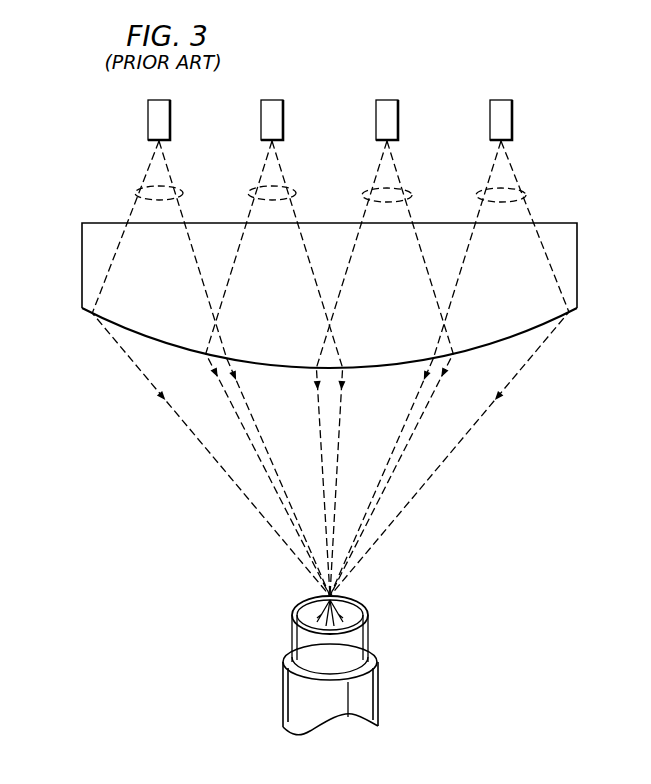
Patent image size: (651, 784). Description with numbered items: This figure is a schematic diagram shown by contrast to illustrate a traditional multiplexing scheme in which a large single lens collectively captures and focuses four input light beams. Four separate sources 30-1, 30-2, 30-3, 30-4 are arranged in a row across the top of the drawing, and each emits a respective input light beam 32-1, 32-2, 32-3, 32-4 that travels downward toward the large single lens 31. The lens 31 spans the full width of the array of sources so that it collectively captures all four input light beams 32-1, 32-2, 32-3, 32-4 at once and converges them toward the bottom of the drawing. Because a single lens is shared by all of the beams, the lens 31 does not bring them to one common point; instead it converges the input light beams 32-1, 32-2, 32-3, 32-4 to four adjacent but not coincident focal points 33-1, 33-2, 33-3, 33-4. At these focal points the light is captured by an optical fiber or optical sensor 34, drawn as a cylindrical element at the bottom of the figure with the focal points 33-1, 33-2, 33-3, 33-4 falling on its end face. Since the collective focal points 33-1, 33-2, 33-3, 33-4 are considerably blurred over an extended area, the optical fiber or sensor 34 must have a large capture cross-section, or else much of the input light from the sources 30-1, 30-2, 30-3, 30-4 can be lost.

The source 30-1 is at (148, 120).
The source 30-2 is at (261, 120).
The source 30-3 is at (398, 120).
The source 30-4 is at (512, 120).
The large single lens 31 is at (82, 262).
The input light beam 32-1 is at (136, 193).
The input light beam 32-2 is at (248, 192).
The input light beam 32-3 is at (411, 195).
The input light beam 32-4 is at (527, 197).
The focal point 33-1 is at (369, 614).
The focal point 33-2 is at (372, 630).
The focal point 33-3 is at (288, 630).
The focal point 33-4 is at (294, 614).
The optical fiber or optical sensor 34 is at (283, 697).